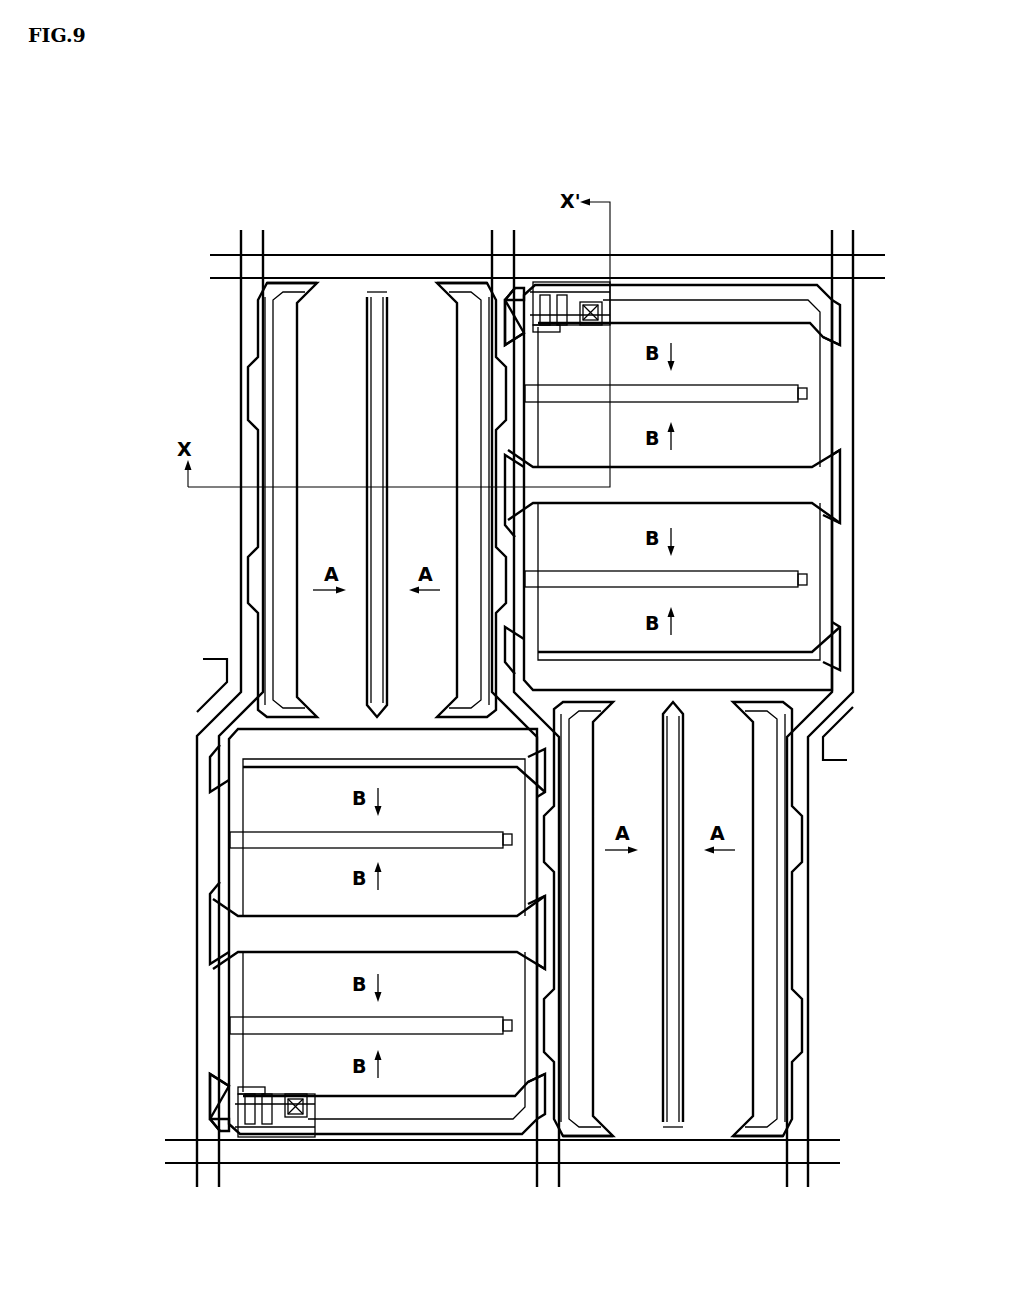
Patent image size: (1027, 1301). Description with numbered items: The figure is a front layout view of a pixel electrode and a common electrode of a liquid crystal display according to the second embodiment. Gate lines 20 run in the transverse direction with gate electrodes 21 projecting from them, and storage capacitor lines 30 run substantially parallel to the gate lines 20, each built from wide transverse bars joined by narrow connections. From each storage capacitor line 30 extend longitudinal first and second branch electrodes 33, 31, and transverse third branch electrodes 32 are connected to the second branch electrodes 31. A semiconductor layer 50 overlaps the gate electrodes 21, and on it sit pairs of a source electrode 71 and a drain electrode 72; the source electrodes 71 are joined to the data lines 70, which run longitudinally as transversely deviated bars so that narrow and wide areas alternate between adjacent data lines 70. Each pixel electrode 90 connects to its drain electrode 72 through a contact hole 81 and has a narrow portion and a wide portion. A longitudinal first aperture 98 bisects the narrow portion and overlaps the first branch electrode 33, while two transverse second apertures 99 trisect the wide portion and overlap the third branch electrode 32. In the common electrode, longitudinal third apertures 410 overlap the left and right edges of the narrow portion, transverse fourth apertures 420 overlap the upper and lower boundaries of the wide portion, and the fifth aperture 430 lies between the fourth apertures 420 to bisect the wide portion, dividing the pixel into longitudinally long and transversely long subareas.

The gate line 20 is at (383, 1163).
The gate electrode 21 is at (238, 1083).
The storage capacitor line 30 is at (333, 717).
The second branch electrode 31 is at (240, 889).
The third branch electrode 32 is at (447, 842).
The first branch electrode 33 is at (384, 432).
The semiconductor layer 50 is at (245, 1133).
The data line 70 is at (248, 372).
The source electrode 71 is at (228, 1110).
The drain electrode 72 is at (272, 1128).
The contact hole 81 is at (300, 1117).
The pixel electrode 90 is at (345, 298).
The first aperture 98 is at (368, 432).
The second aperture 99 is at (397, 831).
The third aperture 410 is at (298, 270).
The fourth aperture 420 is at (207, 768).
The fifth aperture 430 is at (207, 936).